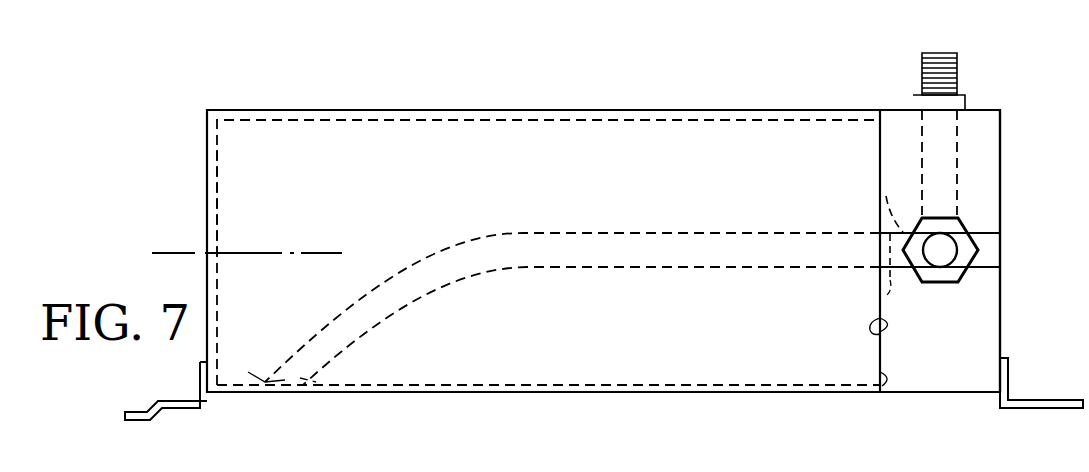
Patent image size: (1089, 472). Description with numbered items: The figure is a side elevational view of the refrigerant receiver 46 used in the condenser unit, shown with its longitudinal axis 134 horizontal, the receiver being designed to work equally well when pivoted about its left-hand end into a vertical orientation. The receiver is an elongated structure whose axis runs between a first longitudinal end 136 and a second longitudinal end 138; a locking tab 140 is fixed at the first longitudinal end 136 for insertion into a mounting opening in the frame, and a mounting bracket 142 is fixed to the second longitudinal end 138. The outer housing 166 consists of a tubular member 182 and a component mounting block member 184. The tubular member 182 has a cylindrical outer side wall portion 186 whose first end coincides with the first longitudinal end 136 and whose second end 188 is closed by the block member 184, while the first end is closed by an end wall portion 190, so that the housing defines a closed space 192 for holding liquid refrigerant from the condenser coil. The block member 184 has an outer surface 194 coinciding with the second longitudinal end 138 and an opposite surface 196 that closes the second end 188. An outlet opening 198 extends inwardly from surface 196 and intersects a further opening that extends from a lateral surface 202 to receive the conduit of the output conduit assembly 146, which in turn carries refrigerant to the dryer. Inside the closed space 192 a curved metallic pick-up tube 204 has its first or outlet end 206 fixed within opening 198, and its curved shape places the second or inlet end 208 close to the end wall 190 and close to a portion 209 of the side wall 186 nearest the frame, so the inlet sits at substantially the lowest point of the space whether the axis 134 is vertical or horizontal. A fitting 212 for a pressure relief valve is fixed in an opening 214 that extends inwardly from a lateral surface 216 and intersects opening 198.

The refrigerant receiver 46 is at (640, 94).
The longitudinal axis 134 is at (246, 252).
The first longitudinal end 136 is at (206, 122).
The second longitudinal end 138 is at (1002, 143).
The locking tab 140 is at (180, 418).
The mounting bracket 142 is at (1063, 410).
The output conduit assembly 146 is at (940, 284).
The outer housing 166 is at (370, 140).
The tubular member 182 is at (530, 393).
The component mounting block member 184 is at (967, 393).
The cylindrical outer side wall portion 186 is at (500, 104).
The second longitudinal end of tubular member 188 is at (878, 384).
The end wall portion 190 is at (201, 204).
The closed space 192 is at (752, 140).
The outer surface 194 is at (1002, 213).
The opposite surface 196 is at (880, 322).
The opening 198 is at (878, 200).
The lateral surface 202 is at (1002, 340).
The pick-up tube 204 is at (498, 226).
The first or outlet end 206 is at (878, 292).
The second or inlet end 208 is at (256, 380).
The portion of side wall 209 is at (349, 380).
The fitting 212 is at (920, 88).
The opening 214 is at (922, 210).
The lateral surface 216 is at (992, 110).